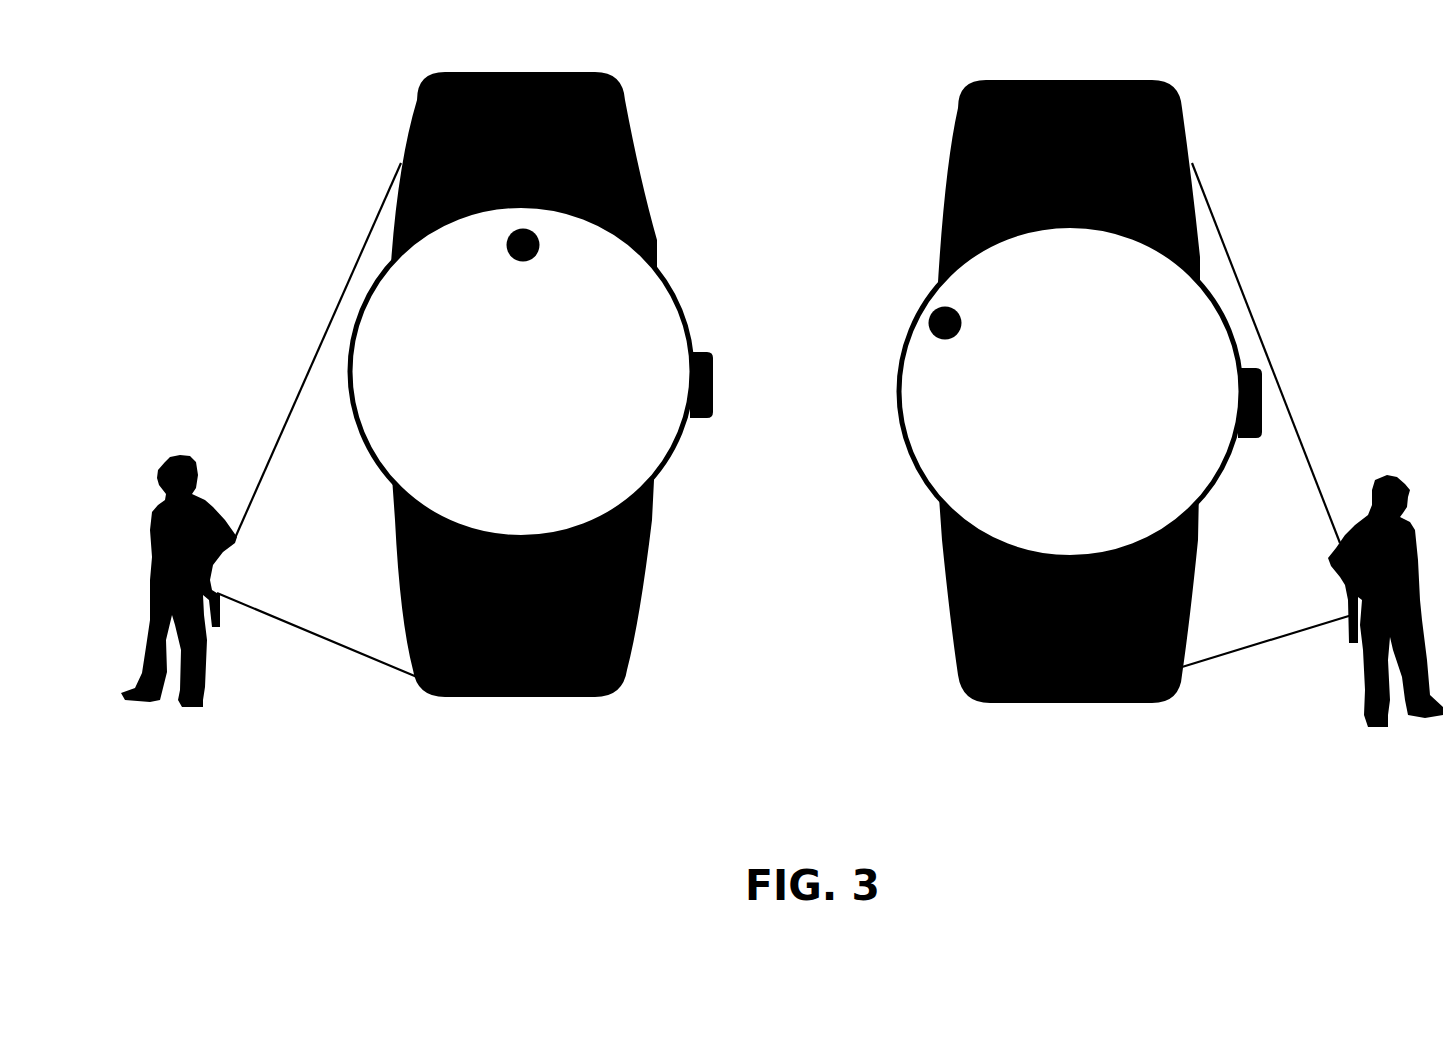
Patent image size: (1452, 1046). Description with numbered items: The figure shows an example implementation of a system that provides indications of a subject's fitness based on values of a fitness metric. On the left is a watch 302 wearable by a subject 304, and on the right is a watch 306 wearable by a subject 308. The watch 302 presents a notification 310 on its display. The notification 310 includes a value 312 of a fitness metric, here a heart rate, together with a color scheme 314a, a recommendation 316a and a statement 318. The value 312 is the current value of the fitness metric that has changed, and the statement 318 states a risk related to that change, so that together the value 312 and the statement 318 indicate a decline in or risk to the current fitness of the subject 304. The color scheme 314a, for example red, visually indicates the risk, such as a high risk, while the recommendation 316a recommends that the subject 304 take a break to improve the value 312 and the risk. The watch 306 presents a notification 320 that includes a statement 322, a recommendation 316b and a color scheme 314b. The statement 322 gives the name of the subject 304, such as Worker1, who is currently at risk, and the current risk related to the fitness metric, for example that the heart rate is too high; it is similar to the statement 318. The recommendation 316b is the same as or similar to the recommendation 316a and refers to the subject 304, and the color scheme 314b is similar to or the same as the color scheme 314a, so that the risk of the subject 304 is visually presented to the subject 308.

The watch 302 is at (567, 359).
The subject 304 is at (203, 698).
The watch 306 is at (1019, 362).
The subject 308 is at (1368, 722).
The notification 310 is at (567, 366).
The value 312 is at (615, 280).
The color scheme 314a is at (507, 246).
The color scheme 314b is at (932, 325).
The recommendation 316a is at (637, 372).
The recommendation 316b is at (1123, 449).
The statement 318 is at (547, 428).
The notification 320 is at (1009, 392).
The statement 322 is at (962, 385).